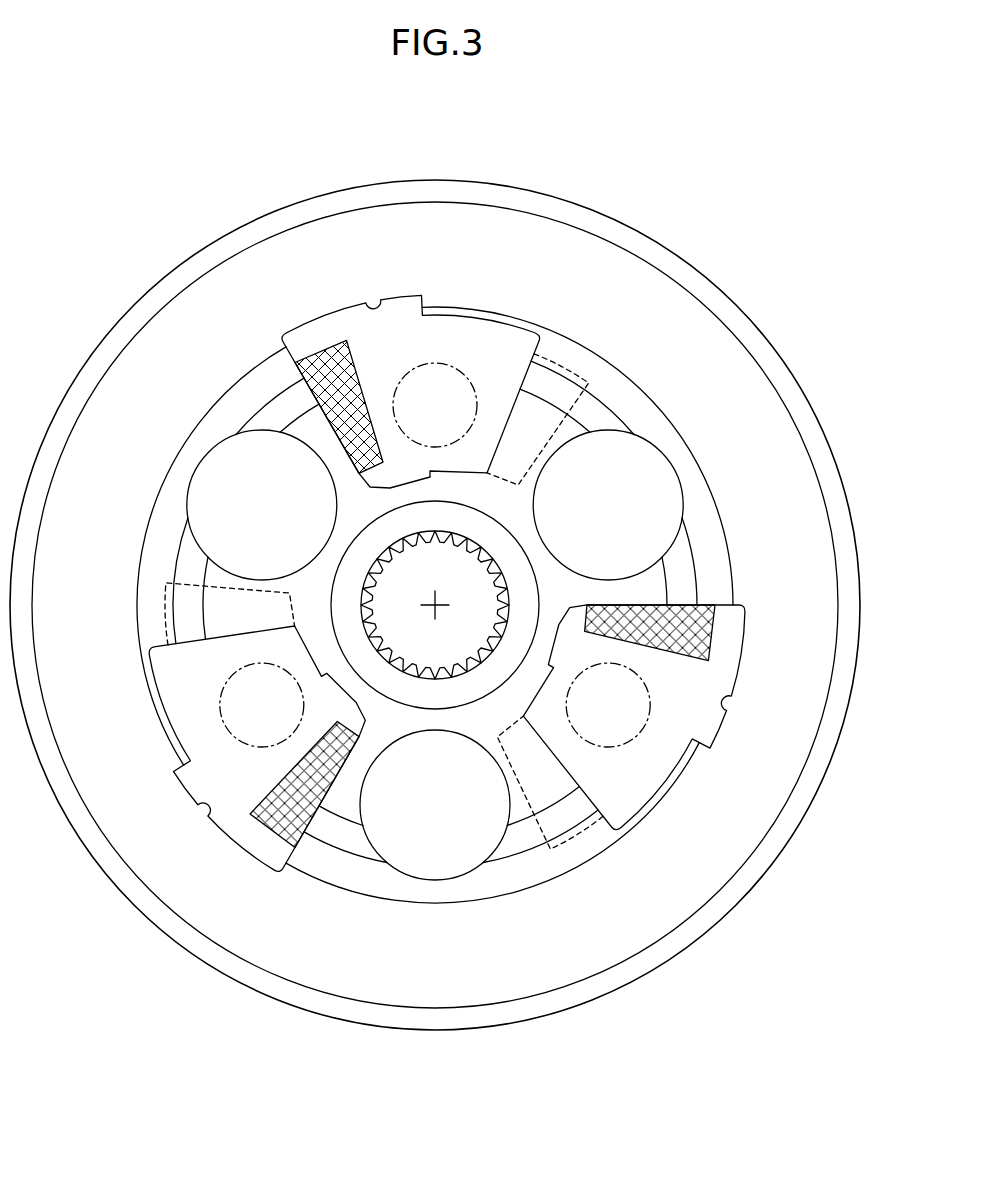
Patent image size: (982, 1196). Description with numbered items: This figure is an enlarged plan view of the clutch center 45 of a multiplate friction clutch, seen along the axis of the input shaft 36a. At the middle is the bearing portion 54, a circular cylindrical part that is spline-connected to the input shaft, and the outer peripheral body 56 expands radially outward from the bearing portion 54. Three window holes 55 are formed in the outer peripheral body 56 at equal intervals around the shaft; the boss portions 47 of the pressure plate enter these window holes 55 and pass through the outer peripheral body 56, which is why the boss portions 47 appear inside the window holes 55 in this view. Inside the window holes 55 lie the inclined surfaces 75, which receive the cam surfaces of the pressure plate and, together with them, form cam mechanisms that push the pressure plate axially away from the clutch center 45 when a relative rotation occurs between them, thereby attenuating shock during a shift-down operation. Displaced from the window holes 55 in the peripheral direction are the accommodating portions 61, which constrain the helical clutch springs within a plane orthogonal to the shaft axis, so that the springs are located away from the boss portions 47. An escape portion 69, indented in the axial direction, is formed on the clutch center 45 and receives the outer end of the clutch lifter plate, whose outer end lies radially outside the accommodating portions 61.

The clutch center 45 is at (165, 270).
The window holes 55 is at (368, 308).
The boss portions 47 is at (456, 368).
The escape portion 69 is at (600, 368).
The inclined surfaces 75 is at (322, 402).
The accommodating portions 61 is at (210, 452).
The bearing portion 54 is at (511, 562).
The outer peripheral body 56 is at (497, 493).
The axis of the input shaft 36a is at (435, 605).